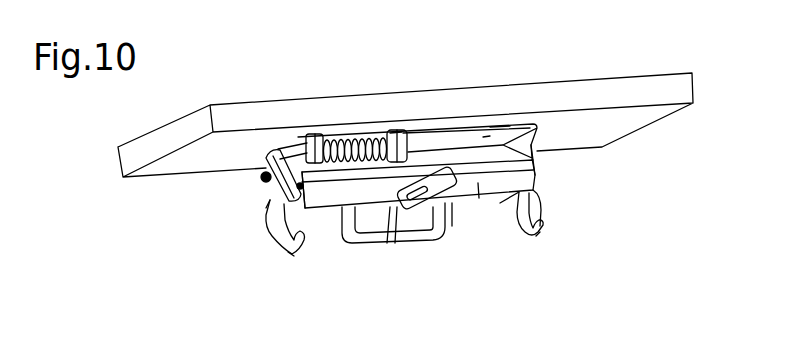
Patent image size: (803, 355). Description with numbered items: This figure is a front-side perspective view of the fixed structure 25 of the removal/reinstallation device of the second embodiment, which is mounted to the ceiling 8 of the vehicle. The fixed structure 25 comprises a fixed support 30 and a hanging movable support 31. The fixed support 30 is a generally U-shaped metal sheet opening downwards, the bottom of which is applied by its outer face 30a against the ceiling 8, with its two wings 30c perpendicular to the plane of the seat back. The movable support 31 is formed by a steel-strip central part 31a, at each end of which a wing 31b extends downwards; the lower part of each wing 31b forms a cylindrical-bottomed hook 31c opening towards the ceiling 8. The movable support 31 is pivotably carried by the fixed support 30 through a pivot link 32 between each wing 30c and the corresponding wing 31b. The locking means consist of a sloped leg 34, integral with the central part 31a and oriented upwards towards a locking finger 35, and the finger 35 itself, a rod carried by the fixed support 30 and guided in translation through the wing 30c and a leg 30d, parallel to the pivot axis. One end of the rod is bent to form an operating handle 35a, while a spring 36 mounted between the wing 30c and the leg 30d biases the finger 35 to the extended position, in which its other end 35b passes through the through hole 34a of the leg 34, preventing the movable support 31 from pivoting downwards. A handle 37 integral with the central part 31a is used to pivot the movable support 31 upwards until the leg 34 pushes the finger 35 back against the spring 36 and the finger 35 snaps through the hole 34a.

The ceiling 8 is at (638, 91).
The fixed structure 25 is at (252, 208).
The fixed support 30 is at (528, 70).
The outer face 30a is at (497, 126).
The wings 30c is at (538, 151).
The leg 30d is at (396, 132).
The movable support 31 is at (538, 184).
The central part 31a is at (478, 198).
The wing 31b is at (266, 208).
The hook 31c is at (290, 258).
The pivot link 32 is at (257, 176).
The leg 34 is at (422, 233).
The through hole 34a is at (388, 244).
The locking finger 35 is at (362, 146).
The operating handle 35a is at (270, 150).
The other end 35b is at (412, 132).
The spring 36 is at (340, 146).
The handle 37 is at (405, 248).